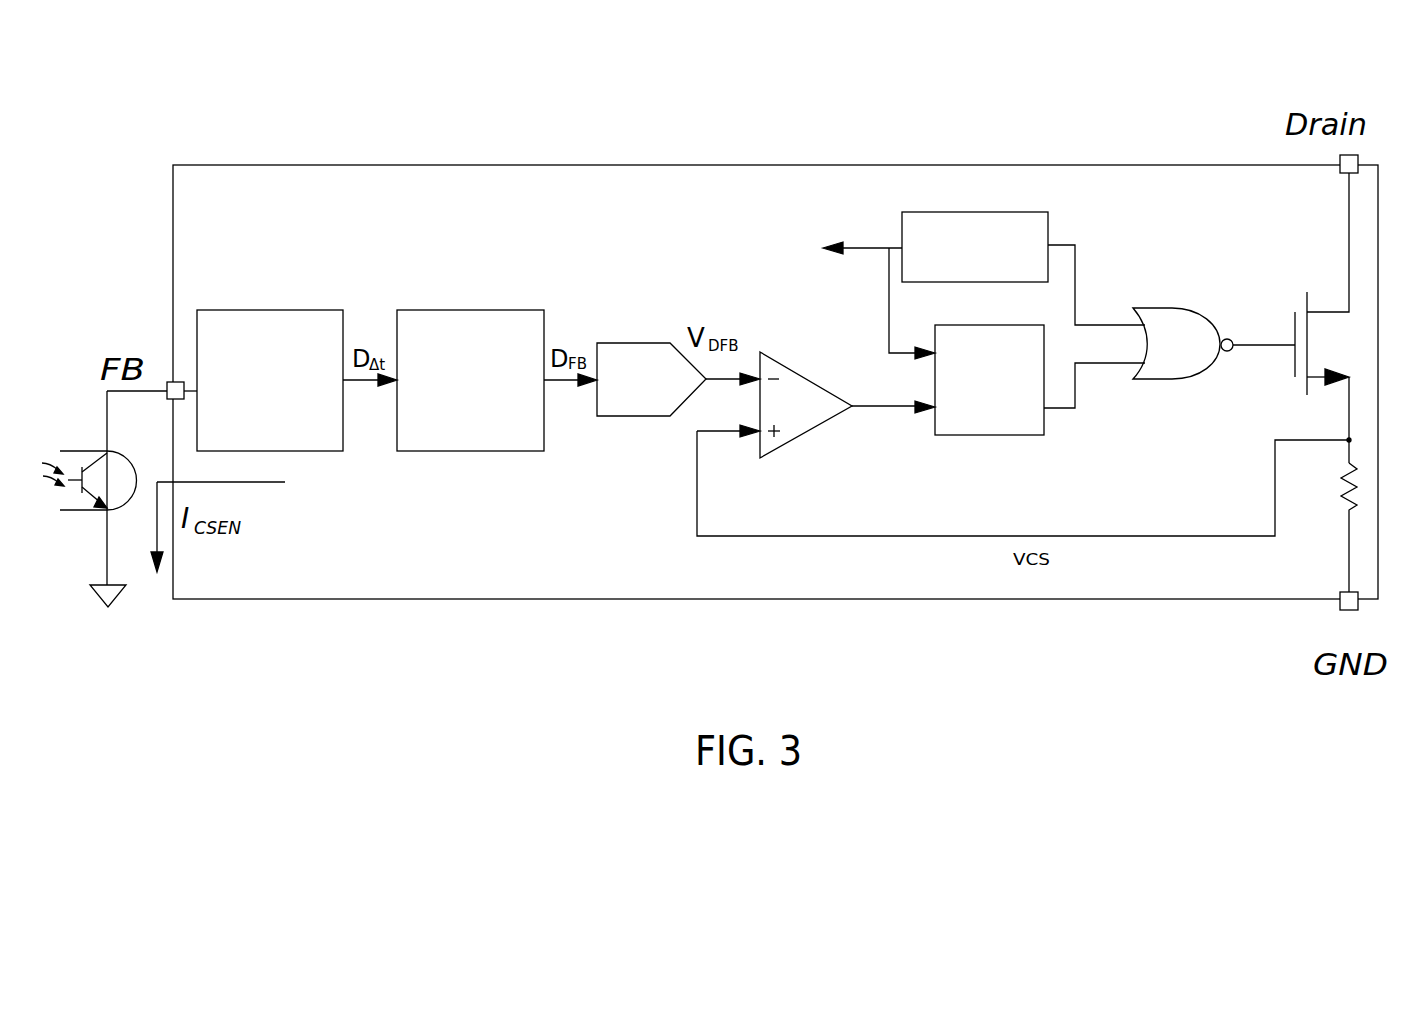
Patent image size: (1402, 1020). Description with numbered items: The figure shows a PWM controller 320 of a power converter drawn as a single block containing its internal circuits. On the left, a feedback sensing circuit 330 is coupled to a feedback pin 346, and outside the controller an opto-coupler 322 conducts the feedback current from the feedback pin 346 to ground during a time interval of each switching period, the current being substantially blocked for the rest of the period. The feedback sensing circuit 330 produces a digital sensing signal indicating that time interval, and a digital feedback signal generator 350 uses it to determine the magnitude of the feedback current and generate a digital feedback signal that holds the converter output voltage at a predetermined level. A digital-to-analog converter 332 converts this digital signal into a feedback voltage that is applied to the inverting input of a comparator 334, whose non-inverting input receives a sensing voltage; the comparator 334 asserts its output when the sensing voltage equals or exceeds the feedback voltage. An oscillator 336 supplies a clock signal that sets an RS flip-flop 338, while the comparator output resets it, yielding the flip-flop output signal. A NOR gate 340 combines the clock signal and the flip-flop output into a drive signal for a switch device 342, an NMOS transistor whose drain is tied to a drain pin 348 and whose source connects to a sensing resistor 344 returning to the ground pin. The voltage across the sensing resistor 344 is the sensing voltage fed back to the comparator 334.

The controller 320 is at (121, 132).
The opto-coupler 322 is at (75, 512).
The feedback sensing circuit 330 is at (258, 310).
The digital-to-analog converter 332 is at (626, 343).
The comparator 334 is at (795, 372).
The oscillator 336 is at (963, 283).
The flip-flop 338 is at (985, 325).
The logic gate 340 is at (1183, 310).
The switch device 342 is at (1295, 364).
The sensing resistor 344 is at (1345, 485).
The feedback pin 346 is at (170, 400).
The drain pin 348 is at (1345, 175).
The digital feedback signal generator 350 is at (458, 310).